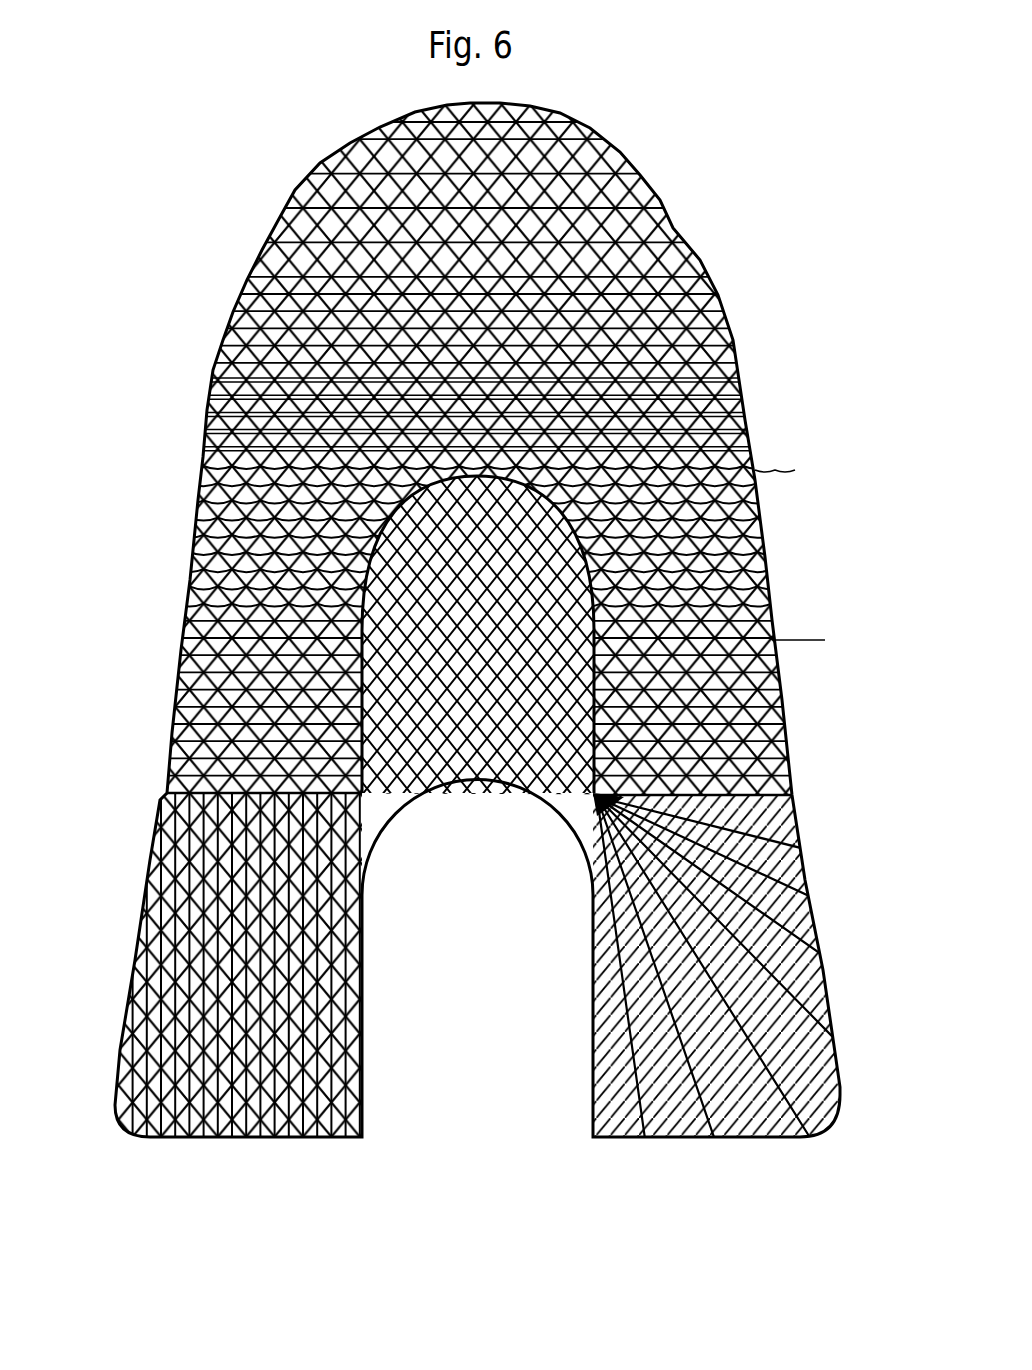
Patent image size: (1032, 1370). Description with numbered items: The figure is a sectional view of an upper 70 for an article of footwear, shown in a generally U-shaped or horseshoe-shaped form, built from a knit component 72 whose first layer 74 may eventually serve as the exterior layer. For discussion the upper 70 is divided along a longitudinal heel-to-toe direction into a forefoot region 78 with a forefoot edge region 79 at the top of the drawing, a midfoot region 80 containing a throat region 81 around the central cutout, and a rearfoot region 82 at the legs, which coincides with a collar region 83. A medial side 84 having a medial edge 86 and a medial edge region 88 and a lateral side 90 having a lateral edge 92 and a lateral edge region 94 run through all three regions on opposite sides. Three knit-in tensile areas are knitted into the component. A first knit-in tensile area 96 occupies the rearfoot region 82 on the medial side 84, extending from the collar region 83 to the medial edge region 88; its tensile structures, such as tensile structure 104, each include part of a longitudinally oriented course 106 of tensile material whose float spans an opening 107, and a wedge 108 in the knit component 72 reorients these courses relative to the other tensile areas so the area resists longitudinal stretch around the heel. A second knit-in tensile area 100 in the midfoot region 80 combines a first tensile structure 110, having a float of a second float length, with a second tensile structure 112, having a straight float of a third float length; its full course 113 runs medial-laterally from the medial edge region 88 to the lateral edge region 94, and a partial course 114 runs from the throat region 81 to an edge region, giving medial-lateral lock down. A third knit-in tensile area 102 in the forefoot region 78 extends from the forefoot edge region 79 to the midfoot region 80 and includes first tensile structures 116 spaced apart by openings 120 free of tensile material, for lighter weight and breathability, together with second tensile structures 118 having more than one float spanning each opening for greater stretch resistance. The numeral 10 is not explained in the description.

The upper 70 is at (622, 150).
The knit component 72 is at (662, 202).
The first layer 74 is at (675, 220).
The forefoot region 78 is at (297, 250).
The forefoot edge region 79 is at (247, 325).
The midfoot region 80 is at (222, 540).
The throat region 81 is at (362, 600).
The rearfoot region 82 is at (125, 965).
The collar region 83 is at (365, 918).
The medial side 84 is at (250, 672).
The medial edge 86 is at (178, 697).
The medial edge region 88 is at (190, 714).
The lateral side 90 is at (740, 752).
The lateral edge 92 is at (765, 760).
The lateral edge region 94 is at (755, 770).
The first knit-in tensile area 96 is at (244, 1150).
The second knit-in tensile area 100 is at (797, 708).
The third knit-in tensile area 102 is at (565, 110).
The tensile structure 104 is at (328, 1130).
The course 106 is at (335, 1068).
The opening 107 is at (340, 1120).
The wedge 108 is at (818, 985).
The first tensile structure 110 is at (738, 512).
The second tensile structure 112 is at (765, 665).
The course 113 is at (725, 468).
The partial course 114 is at (745, 545).
The first tensile structures 116 is at (343, 162).
The second tensile structures 118 is at (705, 385).
The openings 120 is at (337, 188).
The article of footwear 10 is at (360, 1015).